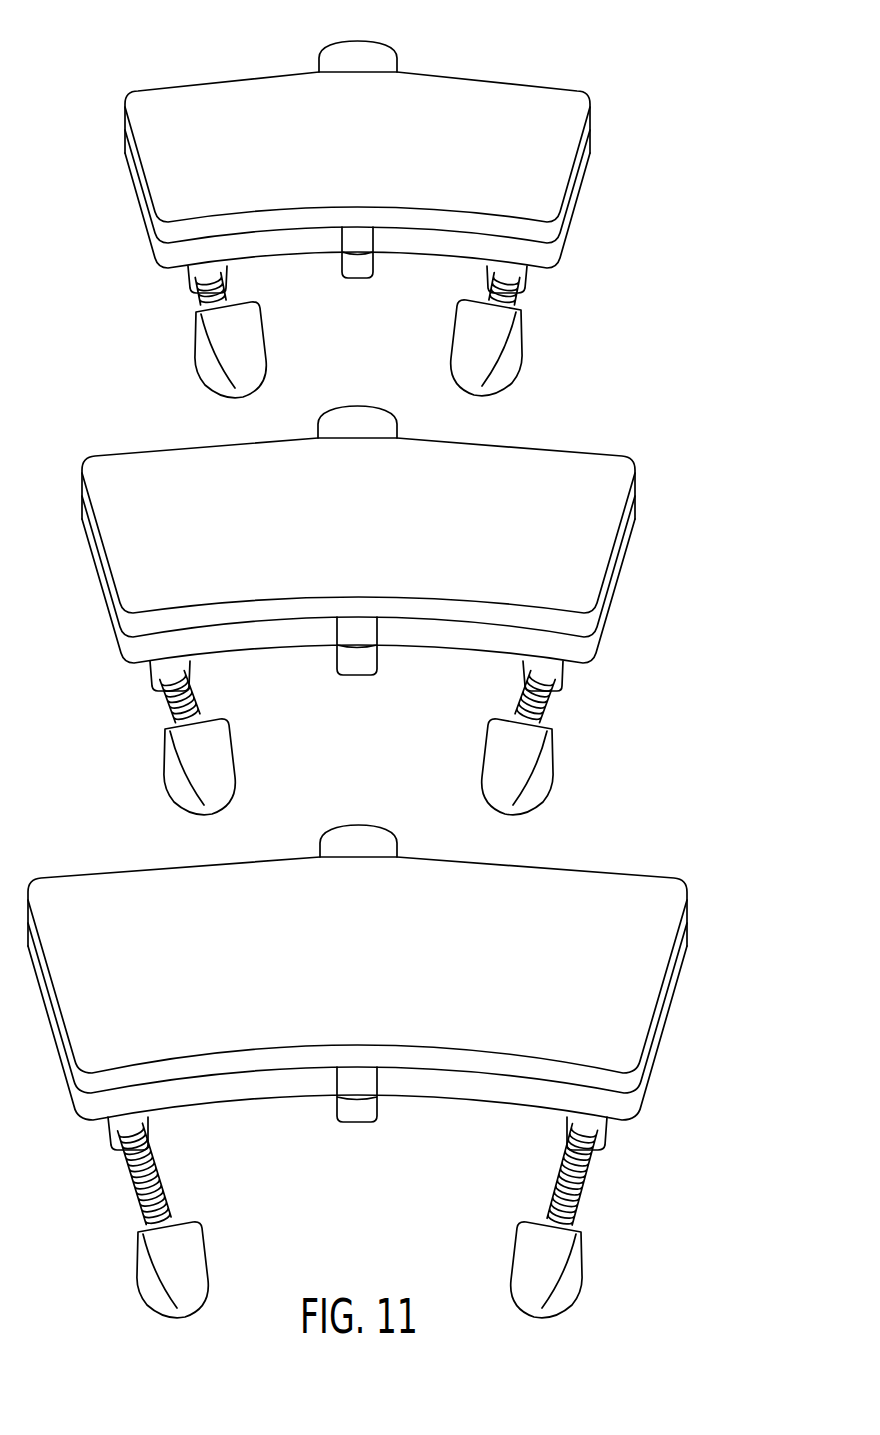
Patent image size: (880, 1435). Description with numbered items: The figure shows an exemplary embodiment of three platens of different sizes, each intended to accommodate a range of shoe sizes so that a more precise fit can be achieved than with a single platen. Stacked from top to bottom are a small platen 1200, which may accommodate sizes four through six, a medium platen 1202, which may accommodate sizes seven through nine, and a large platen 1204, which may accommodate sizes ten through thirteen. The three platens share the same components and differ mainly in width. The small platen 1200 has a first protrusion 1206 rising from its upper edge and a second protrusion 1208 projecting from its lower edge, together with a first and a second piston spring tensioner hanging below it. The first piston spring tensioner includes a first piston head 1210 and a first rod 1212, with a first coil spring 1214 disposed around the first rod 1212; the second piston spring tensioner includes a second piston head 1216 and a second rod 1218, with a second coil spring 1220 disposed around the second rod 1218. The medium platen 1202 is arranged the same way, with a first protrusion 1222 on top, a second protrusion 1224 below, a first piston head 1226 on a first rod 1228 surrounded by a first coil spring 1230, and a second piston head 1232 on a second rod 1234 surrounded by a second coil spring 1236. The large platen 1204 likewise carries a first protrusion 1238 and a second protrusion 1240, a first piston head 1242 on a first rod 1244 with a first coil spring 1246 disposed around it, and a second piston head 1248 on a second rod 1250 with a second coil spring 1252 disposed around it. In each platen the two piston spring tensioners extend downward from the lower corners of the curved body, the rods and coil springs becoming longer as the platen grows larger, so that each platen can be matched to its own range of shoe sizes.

The small platen 1200 is at (593, 83).
The medium platen 1202 is at (638, 448).
The large platen 1204 is at (689, 879).
The first protrusion 1206 is at (383, 56).
The second protrusion 1208 is at (355, 268).
The first piston head 1210 is at (205, 366).
The first rod 1212 is at (222, 289).
The first coil spring 1214 is at (192, 295).
The second piston head 1216 is at (510, 365).
The second rod 1218 is at (493, 289).
The second coil spring 1220 is at (518, 295).
The first protrusion 1222 is at (375, 425).
The second protrusion 1224 is at (355, 667).
The first piston head 1226 is at (175, 783).
The first rod 1228 is at (188, 698).
The first coil spring 1230 is at (162, 706).
The second piston head 1232 is at (540, 783).
The second rod 1234 is at (527, 698).
The second coil spring 1236 is at (557, 706).
The first protrusion 1238 is at (375, 838).
The second protrusion 1240 is at (353, 1115).
The first piston head 1242 is at (150, 1286).
The first rod 1244 is at (160, 1178).
The first coil spring 1246 is at (132, 1180).
The second piston head 1248 is at (565, 1286).
The second rod 1250 is at (567, 1180).
The second coil spring 1252 is at (585, 1180).